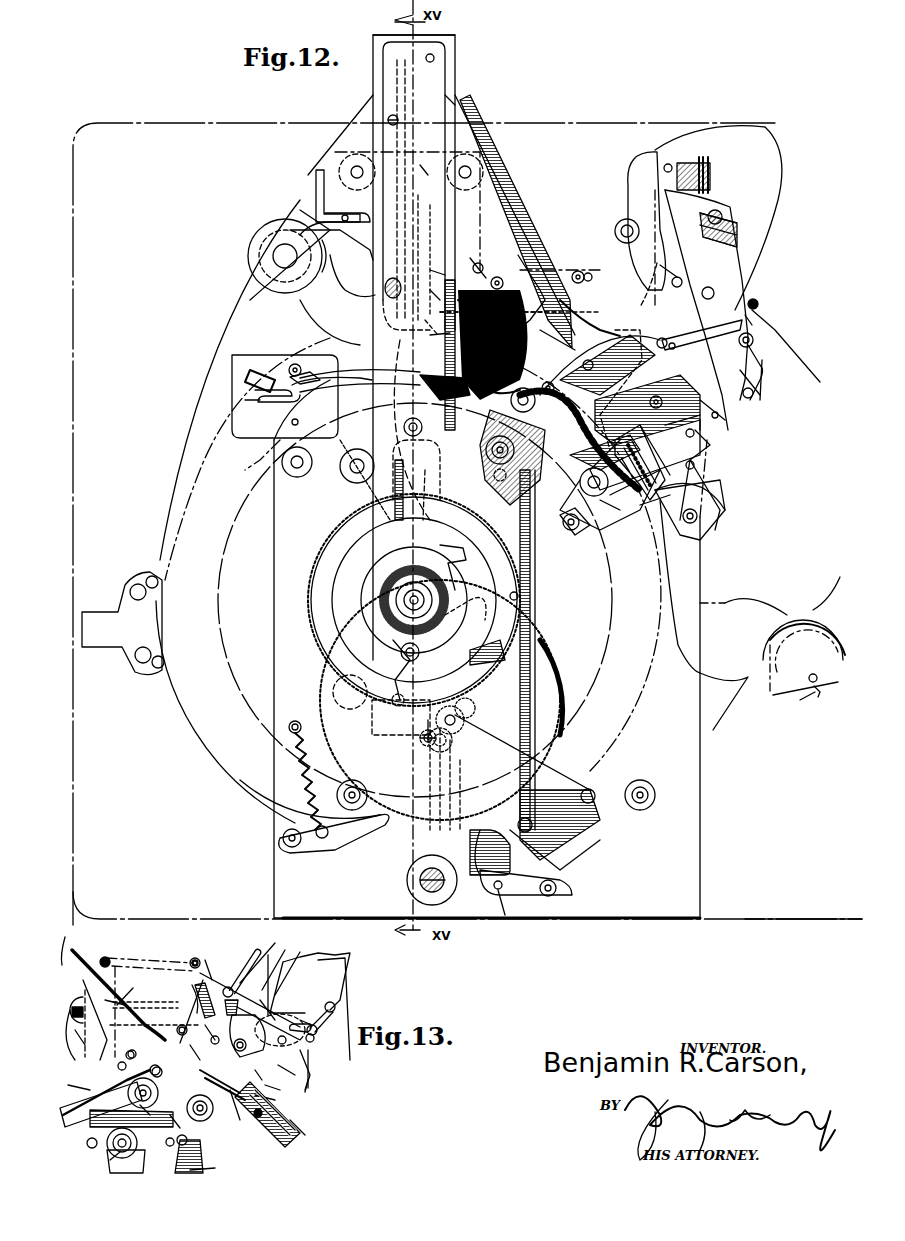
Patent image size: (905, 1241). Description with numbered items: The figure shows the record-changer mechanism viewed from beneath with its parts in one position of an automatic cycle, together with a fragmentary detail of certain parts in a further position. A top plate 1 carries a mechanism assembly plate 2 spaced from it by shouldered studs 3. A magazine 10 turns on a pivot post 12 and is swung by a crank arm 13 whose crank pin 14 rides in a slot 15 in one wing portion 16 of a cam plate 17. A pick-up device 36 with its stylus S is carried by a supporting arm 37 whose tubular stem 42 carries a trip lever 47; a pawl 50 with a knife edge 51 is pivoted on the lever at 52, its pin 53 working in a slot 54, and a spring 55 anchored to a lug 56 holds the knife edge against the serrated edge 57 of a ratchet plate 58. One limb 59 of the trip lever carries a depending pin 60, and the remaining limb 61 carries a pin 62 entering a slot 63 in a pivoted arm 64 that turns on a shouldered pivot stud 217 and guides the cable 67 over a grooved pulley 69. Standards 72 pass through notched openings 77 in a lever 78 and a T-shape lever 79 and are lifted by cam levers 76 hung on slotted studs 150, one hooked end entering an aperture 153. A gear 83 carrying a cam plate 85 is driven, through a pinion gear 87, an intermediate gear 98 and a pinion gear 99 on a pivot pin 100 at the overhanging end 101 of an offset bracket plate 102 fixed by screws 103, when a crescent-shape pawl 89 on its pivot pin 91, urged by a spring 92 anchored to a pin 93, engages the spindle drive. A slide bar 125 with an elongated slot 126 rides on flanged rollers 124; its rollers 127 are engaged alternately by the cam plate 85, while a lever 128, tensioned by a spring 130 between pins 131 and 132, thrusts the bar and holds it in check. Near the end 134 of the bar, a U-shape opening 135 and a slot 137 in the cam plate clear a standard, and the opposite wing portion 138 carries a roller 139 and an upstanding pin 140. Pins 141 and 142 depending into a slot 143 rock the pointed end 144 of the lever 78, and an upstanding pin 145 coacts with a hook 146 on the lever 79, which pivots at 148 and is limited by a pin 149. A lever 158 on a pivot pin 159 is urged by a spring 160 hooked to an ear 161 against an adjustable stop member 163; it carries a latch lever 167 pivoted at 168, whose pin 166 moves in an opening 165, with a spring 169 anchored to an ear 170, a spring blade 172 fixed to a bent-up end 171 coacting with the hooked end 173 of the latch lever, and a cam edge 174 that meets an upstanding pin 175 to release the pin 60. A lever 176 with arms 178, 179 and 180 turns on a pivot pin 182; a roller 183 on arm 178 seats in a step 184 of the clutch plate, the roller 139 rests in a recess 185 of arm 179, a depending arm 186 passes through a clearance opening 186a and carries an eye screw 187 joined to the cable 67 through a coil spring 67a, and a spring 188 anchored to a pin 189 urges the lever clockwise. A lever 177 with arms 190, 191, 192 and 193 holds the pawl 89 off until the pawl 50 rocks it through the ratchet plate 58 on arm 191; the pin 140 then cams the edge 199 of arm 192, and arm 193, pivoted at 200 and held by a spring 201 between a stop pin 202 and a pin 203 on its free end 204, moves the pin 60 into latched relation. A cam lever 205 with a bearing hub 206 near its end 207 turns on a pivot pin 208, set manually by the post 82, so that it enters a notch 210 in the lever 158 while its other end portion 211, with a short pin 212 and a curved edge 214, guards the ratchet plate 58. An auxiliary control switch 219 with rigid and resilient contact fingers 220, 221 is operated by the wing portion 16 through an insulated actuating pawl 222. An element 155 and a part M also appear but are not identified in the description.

In FIG. 12, the base 1 is at (761, 920).
In FIG. 12, the frame plate 2 is at (693, 868).
In FIG. 12, the rollers 3 is at (352, 780).
In FIG. 12, the casing 10 is at (222, 338).
In FIG. 12, the bearing 12 is at (272, 258).
In FIG. 12, the link 13 is at (340, 265).
In FIG. 12, the bracket arm 14 is at (335, 218).
In FIG. 12, the bracket 15 is at (318, 183).
In FIG. 12, the cover plate 16 is at (330, 150).
In FIG. 12, the guide bar 17 is at (430, 75).
In FIG. 12, the lever 36 is at (776, 678).
In FIG. 12, the casing wall 37 is at (747, 600).
In FIG. 12, the screw 42 is at (720, 212).
In FIG. 12, the arm 47 is at (727, 253).
In FIG. 13, the arm 47 is at (347, 975).
In FIG. 12, the plate 50 is at (765, 368).
In FIG. 13, the plate 50 is at (312, 1063).
In FIG. 12, the pin 51 is at (768, 388).
In FIG. 13, the pin 51 is at (312, 1085).
In FIG. 12, the link 52 is at (754, 386).
In FIG. 13, the link 52 is at (290, 1075).
In FIG. 12, the stud 53 is at (755, 339).
In FIG. 13, the stud 53 is at (314, 1038).
In FIG. 12, the link 54 is at (748, 318).
In FIG. 13, the link 54 is at (307, 1012).
In FIG. 12, the rod 55 is at (760, 318).
In FIG. 13, the rod 55 is at (318, 1028).
In FIG. 12, the pin 56 is at (758, 302).
In FIG. 13, the pin 56 is at (338, 1004).
In FIG. 12, the slotted lever 57 is at (648, 462).
In FIG. 13, the slotted lever 57 is at (285, 1115).
In FIG. 12, the pin 58 is at (650, 525).
In FIG. 13, the pin 58 is at (300, 1140).
In FIG. 12, the rod 59 is at (675, 343).
In FIG. 12, the pin 60 is at (662, 338).
In FIG. 13, the pin 60 is at (230, 985).
In FIG. 12, the stud 61 is at (640, 213).
In FIG. 12, the cam lever 62 is at (660, 180).
In FIG. 12, the pin 63 is at (670, 164).
In FIG. 12, the block 64 is at (700, 163).
In FIG. 12, the rod 67 is at (588, 312).
In FIG. 13, the rod 67 is at (155, 1015).
In FIG. 12, the rod end 67a is at (482, 312).
In FIG. 13, the rod end 67a is at (123, 985).
In FIG. 12, the spring 69 is at (710, 170).
In FIG. 12, the link 72 is at (370, 295).
In FIG. 12, the shaft 76 is at (425, 776).
In FIG. 12, the bearing 77 is at (415, 905).
In FIG. 12, the arm 78 is at (355, 318).
In FIG. 12, the support 79 is at (495, 865).
In FIG. 12, the pivot 82 is at (700, 516).
In FIG. 12, the gear 83 is at (325, 585).
In FIG. 12, the slot 85 is at (430, 450).
In FIG. 12, the hub 87 is at (382, 590).
In FIG. 12, the disc 89 is at (362, 603).
In FIG. 12, the pawl 91 is at (405, 668).
In FIG. 12, the pin 92 is at (455, 560).
In FIG. 12, the spring 93 is at (465, 612).
In FIG. 12, the gear segment 98 is at (535, 655).
In FIG. 12, the pinion 99 is at (475, 708).
In FIG. 12, the pinion 100 is at (462, 712).
In FIG. 12, the lever 101 is at (510, 740).
In FIG. 12, the arm 102 is at (575, 790).
In FIG. 12, the bracket 103 is at (598, 812).
In FIG. 12, the rollers 124 is at (335, 692).
In FIG. 12, the slide 125 is at (458, 105).
In FIG. 12, the slot 126 is at (410, 485).
In FIG. 12, the screw 127 is at (404, 426).
In FIG. 12, the lever 128 is at (360, 833).
In FIG. 12, the spring 130 is at (306, 790).
In FIG. 12, the pivot 131 is at (322, 845).
In FIG. 13, the pivot 131 is at (82, 1150).
In FIG. 12, the pin 132 is at (287, 727).
In FIG. 12, the bar top 134 is at (455, 38).
In FIG. 12, the slot 135 is at (395, 335).
In FIG. 12, the slide bar 137 is at (422, 165).
In FIG. 12, the link 138 is at (500, 190).
In FIG. 12, the pin 139 is at (497, 276).
In FIG. 12, the lever 140 is at (508, 225).
In FIG. 13, the lever 140 is at (121, 1062).
In FIG. 12, the slot 141 is at (420, 185).
In FIG. 12, the pin 142 is at (431, 320).
In FIG. 12, the guide 143 is at (438, 249).
In FIG. 12, the block 144 is at (441, 289).
In FIG. 12, the pin 145 is at (409, 742).
In FIG. 12, the gear 146 is at (450, 738).
In FIG. 12, the bracket 148 is at (560, 886).
In FIG. 12, the screw 149 is at (502, 920).
In FIG. 12, the ratchet 150 is at (420, 738).
In FIG. 12, the block 153 is at (410, 712).
In FIG. 12, the pin 155 is at (441, 270).
In FIG. 13, the pin 155 is at (159, 1150).
In FIG. 12, the lever 158 is at (645, 432).
In FIG. 13, the lever 158 is at (222, 1122).
In FIG. 13, the pin 159 is at (186, 1132).
In FIG. 12, the pivot 160 is at (562, 517).
In FIG. 13, the pivot 160 is at (218, 1168).
In FIG. 13, the pin 161 is at (180, 1150).
In FIG. 12, the link 163 is at (585, 532).
In FIG. 12, the pin 165 is at (654, 400).
In FIG. 13, the pin 165 is at (238, 1034).
In FIG. 12, the lever 166 is at (682, 426).
In FIG. 12, the pin 167 is at (735, 393).
In FIG. 13, the pin 167 is at (209, 1030).
In FIG. 13, the link 168 is at (265, 1005).
In FIG. 13, the pin 169 is at (272, 1070).
In FIG. 13, the lever 170 is at (206, 1125).
In FIG. 13, the rod 171 is at (268, 970).
In FIG. 13, the rod 172 is at (285, 980).
In FIG. 13, the link 173 is at (211, 960).
In FIG. 12, the pin 174 is at (722, 416).
In FIG. 12, the link 175 is at (722, 422).
In FIG. 12, the pivot 176 is at (512, 446).
In FIG. 12, the arm 177 is at (397, 385).
In FIG. 12, the bar 178 is at (527, 540).
In FIG. 12, the plate 179 is at (490, 375).
In FIG. 13, the plate 179 is at (74, 1090).
In FIG. 12, the lever 180 is at (615, 345).
In FIG. 12, the pin 182 is at (485, 492).
In FIG. 13, the pin 182 is at (99, 1165).
In FIG. 12, the bar 183 is at (538, 590).
In FIG. 12, the block 184 is at (487, 652).
In FIG. 12, the slot 185 is at (420, 465).
In FIG. 13, the slot 185 is at (173, 1126).
In FIG. 12, the bar 186 is at (393, 115).
In FIG. 13, the bar 186 is at (80, 1000).
In FIG. 12, the bar end 186a is at (476, 260).
In FIG. 13, the pin 187 is at (71, 1038).
In FIG. 12, the pin 188 is at (576, 272).
In FIG. 13, the pin 188 is at (190, 960).
In FIG. 12, the pin 189 is at (588, 275).
In FIG. 12, the rod 190 is at (340, 392).
In FIG. 12, the pin 191 is at (655, 470).
In FIG. 12, the lever 192 is at (560, 335).
In FIG. 13, the lever 192 is at (138, 991).
In FIG. 12, the link 193 is at (640, 325).
In FIG. 13, the link 193 is at (185, 993).
In FIG. 12, the lever 199 is at (520, 255).
In FIG. 13, the lever 199 is at (71, 944).
In FIG. 12, the pin 200 is at (589, 360).
In FIG. 13, the pin 200 is at (168, 1025).
In FIG. 13, the arm 201 is at (195, 1050).
In FIG. 12, the pin 202 is at (548, 382).
In FIG. 13, the pin 202 is at (145, 1045).
In FIG. 13, the pin 203 is at (250, 1110).
In FIG. 13, the link 204 is at (276, 1098).
In FIG. 12, the plate 205 is at (710, 495).
In FIG. 12, the lever 206 is at (625, 505).
In FIG. 12, the arm 207 is at (605, 453).
In FIG. 12, the pin 208 is at (630, 530).
In FIG. 12, the segment 210 is at (570, 420).
In FIG. 12, the arm 211 is at (713, 448).
In FIG. 12, the pin 212 is at (696, 465).
In FIG. 12, the arm 214 is at (720, 480).
In FIG. 12, the pin 217 is at (658, 265).
In FIG. 12, the plate 219 is at (242, 440).
In FIG. 12, the spring clip 220 is at (285, 396).
In FIG. 12, the spring 221 is at (292, 400).
In FIG. 12, the pin 222 is at (320, 375).
In FIG. 13, the motor pin M is at (163, 1073).
In FIG. 12, the switch S is at (802, 703).